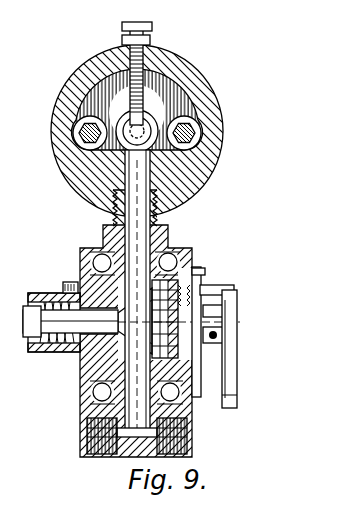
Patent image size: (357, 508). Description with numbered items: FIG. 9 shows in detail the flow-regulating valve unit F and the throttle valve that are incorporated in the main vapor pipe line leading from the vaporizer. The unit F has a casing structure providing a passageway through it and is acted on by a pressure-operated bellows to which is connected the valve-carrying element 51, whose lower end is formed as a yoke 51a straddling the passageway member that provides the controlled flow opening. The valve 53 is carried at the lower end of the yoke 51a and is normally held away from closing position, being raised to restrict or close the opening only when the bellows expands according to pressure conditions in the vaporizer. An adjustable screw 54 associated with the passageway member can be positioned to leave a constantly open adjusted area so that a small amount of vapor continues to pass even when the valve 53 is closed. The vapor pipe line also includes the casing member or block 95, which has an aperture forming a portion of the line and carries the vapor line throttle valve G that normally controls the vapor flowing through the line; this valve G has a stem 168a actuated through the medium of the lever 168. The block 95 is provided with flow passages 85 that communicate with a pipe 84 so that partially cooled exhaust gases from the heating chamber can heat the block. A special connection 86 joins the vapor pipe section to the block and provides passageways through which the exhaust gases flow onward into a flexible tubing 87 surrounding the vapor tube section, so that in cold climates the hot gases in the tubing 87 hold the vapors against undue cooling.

The valve-carrying element 51 is at (56, 93).
The flow-regulating valve unit F is at (204, 70).
The yoke 51a is at (202, 115).
The valve 53 is at (170, 152).
The adjustable screw 54 is at (140, 23).
The pipe 84 is at (110, 223).
The flow passages 85 is at (82, 250).
The special connection 86 is at (90, 456).
The flexible tubing 87 is at (193, 437).
The casing member or block 95 is at (82, 375).
The vapor line throttle valve G is at (208, 277).
The lever 168 is at (268, 348).
The stem 168a is at (241, 323).